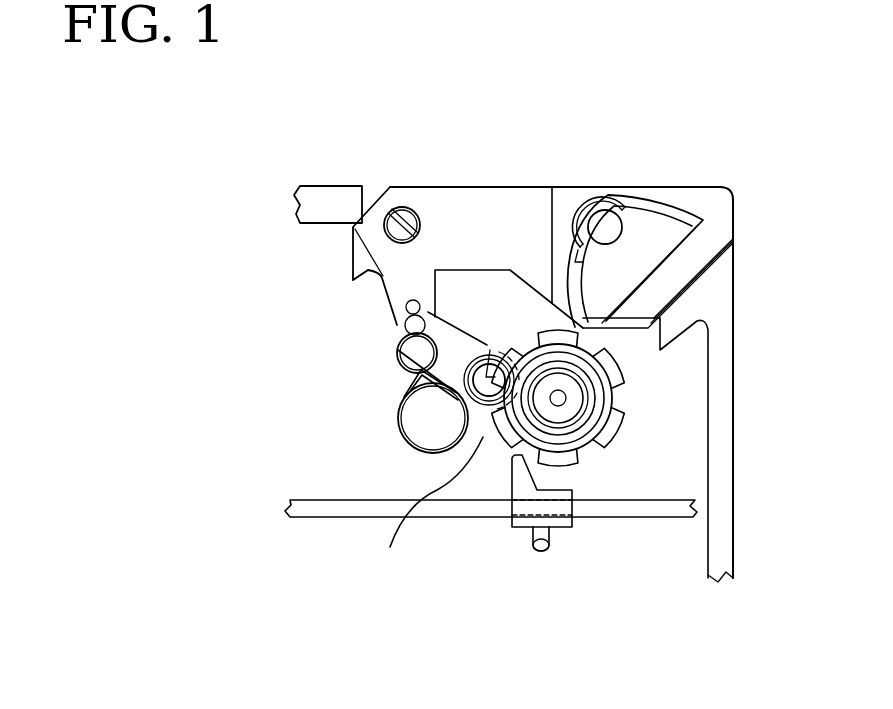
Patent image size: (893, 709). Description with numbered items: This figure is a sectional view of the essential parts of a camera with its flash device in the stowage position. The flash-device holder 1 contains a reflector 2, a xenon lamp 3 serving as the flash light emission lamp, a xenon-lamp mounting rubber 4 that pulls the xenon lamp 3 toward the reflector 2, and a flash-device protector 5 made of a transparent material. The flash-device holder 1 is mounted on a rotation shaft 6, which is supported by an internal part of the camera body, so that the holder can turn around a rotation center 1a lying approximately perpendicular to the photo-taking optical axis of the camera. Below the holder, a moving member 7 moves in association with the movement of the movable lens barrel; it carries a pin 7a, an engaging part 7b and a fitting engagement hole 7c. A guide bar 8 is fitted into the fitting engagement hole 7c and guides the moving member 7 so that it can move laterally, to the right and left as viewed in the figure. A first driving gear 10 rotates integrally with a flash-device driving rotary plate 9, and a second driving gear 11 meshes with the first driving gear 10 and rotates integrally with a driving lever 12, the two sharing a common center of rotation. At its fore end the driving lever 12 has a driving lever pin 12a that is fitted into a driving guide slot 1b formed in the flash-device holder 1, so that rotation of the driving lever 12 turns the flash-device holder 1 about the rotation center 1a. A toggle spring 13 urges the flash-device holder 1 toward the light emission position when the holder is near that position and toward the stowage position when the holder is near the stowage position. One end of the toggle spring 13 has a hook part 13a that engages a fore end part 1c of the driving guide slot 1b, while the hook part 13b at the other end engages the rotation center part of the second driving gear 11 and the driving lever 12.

The flash-device holder 1 is at (533, 203).
The rotation center 1a is at (386, 187).
The driving guide slot 1b is at (372, 297).
The fore end part of the driving guide slot 1c is at (398, 368).
The reflector 2 is at (678, 193).
The xenon lamp 3 is at (608, 222).
The xenon-lamp mounting rubber 4 is at (577, 200).
The flash-device protector 5 is at (736, 235).
The rotation shaft 6 is at (415, 207).
The moving member 7 is at (523, 528).
The pin 7a is at (547, 532).
The engaging part 7b is at (511, 456).
The fitting engagement hole 7c is at (573, 508).
The guide bar 8 is at (317, 512).
The flash-device driving rotary plate 9 is at (607, 440).
The first driving gear 10 is at (593, 380).
The second driving gear 11 is at (431, 511).
The driving lever 12 is at (452, 340).
The driving lever pin 12a is at (404, 328).
The toggle spring 13 is at (407, 437).
The hook part 13a is at (398, 375).
The hook part 13b is at (497, 345).